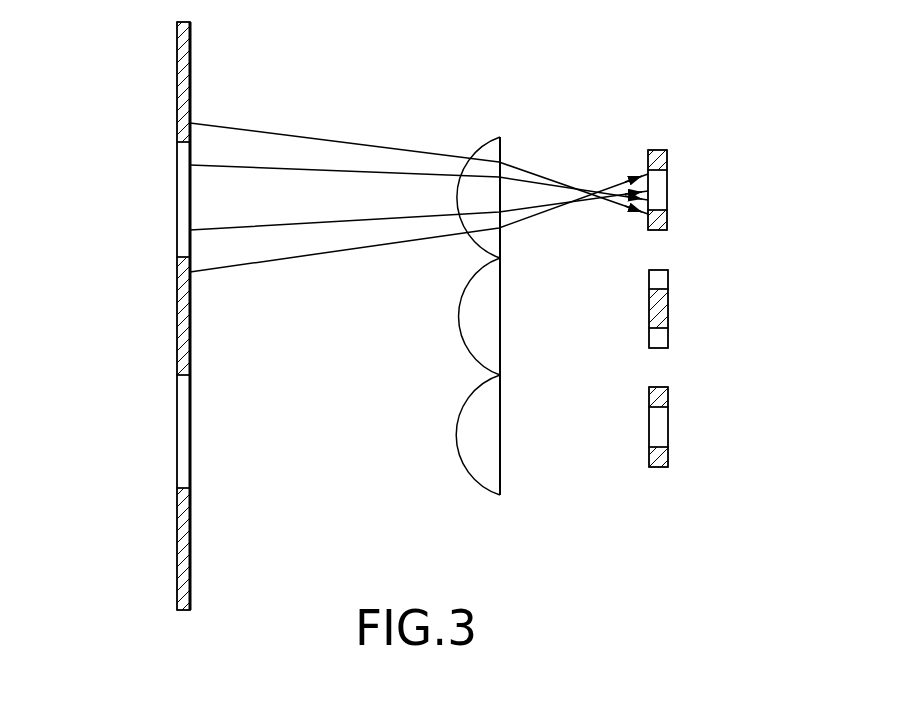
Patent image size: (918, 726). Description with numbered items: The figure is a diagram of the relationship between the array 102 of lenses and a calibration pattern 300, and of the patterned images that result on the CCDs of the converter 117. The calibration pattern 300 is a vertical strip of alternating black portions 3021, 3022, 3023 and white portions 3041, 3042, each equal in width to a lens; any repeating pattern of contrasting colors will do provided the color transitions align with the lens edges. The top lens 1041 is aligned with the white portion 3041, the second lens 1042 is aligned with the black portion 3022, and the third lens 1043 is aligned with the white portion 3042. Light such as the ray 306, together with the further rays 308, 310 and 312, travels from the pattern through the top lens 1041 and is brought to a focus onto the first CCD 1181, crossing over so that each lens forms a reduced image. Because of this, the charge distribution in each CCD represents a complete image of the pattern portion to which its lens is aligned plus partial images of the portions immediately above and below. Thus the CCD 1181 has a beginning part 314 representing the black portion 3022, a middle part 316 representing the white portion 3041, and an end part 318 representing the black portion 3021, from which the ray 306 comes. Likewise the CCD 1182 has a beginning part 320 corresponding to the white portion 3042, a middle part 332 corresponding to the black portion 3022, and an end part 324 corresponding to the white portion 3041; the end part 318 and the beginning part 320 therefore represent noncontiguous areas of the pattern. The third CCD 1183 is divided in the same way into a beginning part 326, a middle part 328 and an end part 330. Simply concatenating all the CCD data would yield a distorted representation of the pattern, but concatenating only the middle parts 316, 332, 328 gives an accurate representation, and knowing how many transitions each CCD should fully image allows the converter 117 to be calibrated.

The calibration pattern 300 is at (183, 316).
The black portion 3021 is at (178, 56).
The black portion 3022 is at (190, 330).
The black portion 3023 is at (190, 543).
The white portion 3041 is at (178, 188).
The white portion 3042 is at (178, 418).
The ray 306 is at (321, 138).
The light ray 308 is at (295, 170).
The light ray 310 is at (228, 228).
The light ray 312 is at (331, 256).
The array of lenses 102 is at (484, 265).
The top lens 1041 is at (463, 190).
The second lens 1042 is at (490, 333).
The third lens 1043 is at (490, 460).
The converter 117 is at (663, 255).
The CCD 1181 is at (705, 180).
The CCD 1182 is at (665, 310).
The CCD 1183 is at (660, 435).
The beginning part 314 is at (667, 156).
The middle part 316 is at (659, 182).
The end part 318 is at (668, 216).
The beginning part 320 is at (660, 282).
The detector region 332 is at (650, 304).
The end part 324 is at (660, 336).
The detector region 326 is at (660, 402).
The middle part 328 is at (660, 423).
The detector region 330 is at (668, 458).